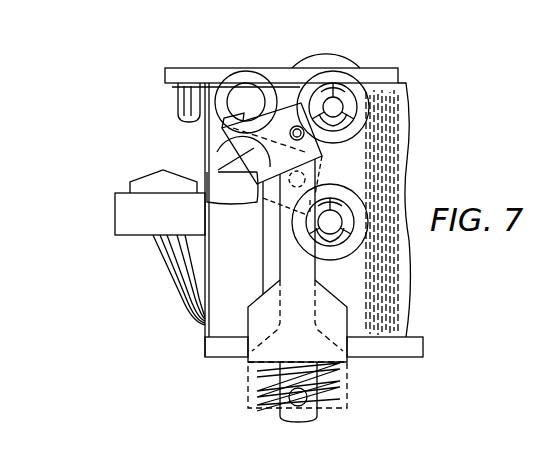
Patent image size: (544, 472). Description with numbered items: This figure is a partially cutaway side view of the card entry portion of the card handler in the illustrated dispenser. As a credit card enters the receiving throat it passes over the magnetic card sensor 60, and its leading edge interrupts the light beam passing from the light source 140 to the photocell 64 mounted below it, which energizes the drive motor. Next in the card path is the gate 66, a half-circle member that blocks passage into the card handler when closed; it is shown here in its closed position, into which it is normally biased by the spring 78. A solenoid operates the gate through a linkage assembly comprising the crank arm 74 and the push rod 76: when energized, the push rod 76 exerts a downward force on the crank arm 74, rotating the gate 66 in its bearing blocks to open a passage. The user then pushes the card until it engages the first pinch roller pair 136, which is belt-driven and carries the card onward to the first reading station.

The magnetic card sensor 60 is at (152, 168).
The photocell 64 is at (137, 236).
The gate 66 is at (220, 148).
The crank arm 74 is at (325, 157).
The push rod 76 is at (345, 328).
The spring 78 is at (335, 389).
The first pinch roller pair 136 is at (338, 56).
The light source 140 is at (180, 108).